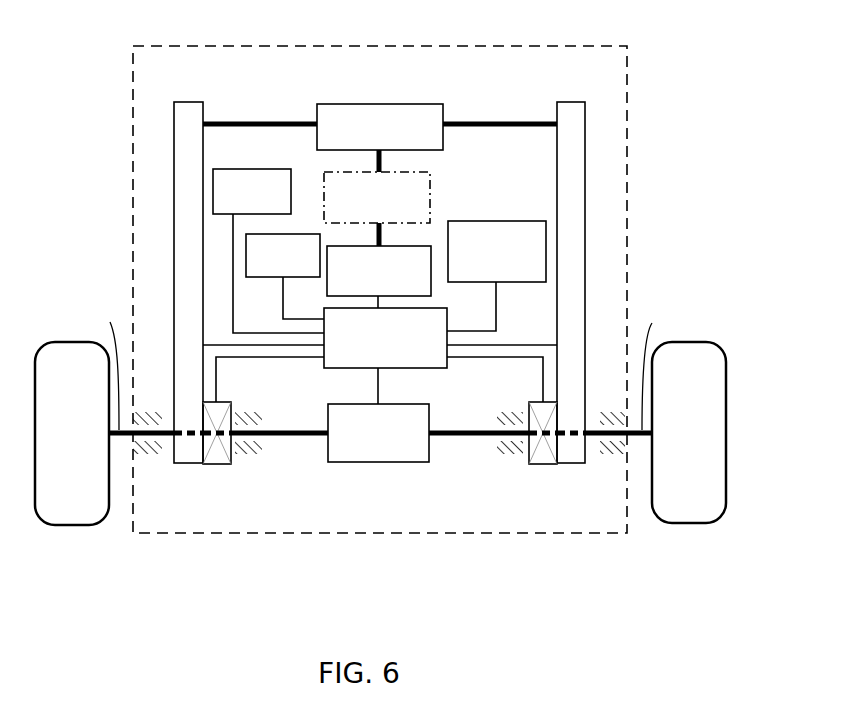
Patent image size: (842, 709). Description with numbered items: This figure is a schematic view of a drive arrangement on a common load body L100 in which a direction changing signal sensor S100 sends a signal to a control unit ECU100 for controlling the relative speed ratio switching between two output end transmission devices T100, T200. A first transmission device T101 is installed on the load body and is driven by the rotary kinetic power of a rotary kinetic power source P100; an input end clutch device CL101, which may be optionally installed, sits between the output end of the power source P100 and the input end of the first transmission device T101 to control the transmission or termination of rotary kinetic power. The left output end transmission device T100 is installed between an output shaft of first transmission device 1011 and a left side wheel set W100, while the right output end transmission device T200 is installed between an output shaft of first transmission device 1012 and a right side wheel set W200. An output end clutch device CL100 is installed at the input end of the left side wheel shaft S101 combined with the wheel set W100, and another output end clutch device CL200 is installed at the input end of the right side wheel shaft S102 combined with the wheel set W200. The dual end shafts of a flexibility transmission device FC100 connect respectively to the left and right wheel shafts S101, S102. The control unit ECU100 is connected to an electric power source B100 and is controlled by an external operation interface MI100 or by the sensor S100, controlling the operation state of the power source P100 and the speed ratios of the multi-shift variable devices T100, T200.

The common load body L100 is at (133, 257).
The output end transmission device T100 is at (174, 180).
The output end transmission device T200 is at (585, 180).
The output shaft of first transmission device 1011 is at (243, 122).
The output shaft of first transmission device 1012 is at (478, 122).
The first transmission device T101 is at (380, 127).
The input end clutch device CL101 is at (377, 197).
The electric power source B100 is at (268, 251).
The direction changing signal sensor S100 is at (285, 276).
The rotary kinetic power source P100 is at (379, 277).
The external operation interface MI100 is at (496, 276).
The control unit ECU100 is at (380, 356).
The flexibility transmission device FC100 is at (378, 433).
The output end clutch device CL100 is at (218, 456).
The output end clutch device CL200 is at (546, 456).
The left side wheel set W100 is at (63, 485).
The right side wheel set W200 is at (685, 502).
The left side wheel shaft S101 is at (83, 370).
The right side wheel shaft S102 is at (678, 370).